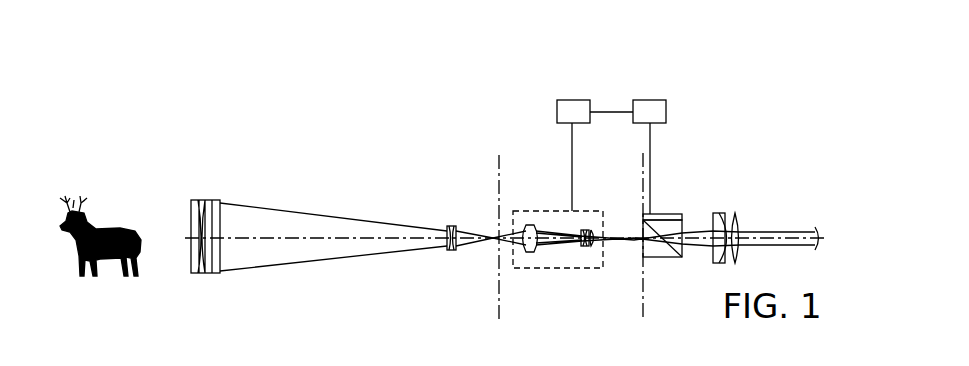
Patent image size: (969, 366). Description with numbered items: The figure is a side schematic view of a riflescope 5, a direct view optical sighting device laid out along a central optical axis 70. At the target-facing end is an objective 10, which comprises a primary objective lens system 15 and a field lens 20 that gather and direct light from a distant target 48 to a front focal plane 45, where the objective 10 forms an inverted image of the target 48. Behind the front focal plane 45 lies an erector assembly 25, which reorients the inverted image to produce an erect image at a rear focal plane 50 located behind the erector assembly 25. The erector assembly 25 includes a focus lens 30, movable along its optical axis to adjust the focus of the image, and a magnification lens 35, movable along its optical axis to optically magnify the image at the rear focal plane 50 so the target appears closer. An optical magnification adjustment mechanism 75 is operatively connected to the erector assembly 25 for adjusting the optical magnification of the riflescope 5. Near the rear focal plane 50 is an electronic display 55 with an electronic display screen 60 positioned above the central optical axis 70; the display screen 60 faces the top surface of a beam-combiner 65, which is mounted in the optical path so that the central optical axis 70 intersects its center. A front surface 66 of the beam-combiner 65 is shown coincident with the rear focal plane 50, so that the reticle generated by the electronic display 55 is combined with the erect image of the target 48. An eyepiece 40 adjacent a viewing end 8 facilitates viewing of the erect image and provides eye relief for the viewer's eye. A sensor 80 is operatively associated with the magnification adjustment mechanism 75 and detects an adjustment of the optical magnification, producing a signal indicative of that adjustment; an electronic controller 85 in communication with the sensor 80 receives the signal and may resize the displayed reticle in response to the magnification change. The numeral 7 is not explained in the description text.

The riflescope 5 is at (402, 78).
The objective lens 7 is at (196, 196).
The viewing end 8 is at (787, 226).
The objective 10 is at (307, 231).
The primary objective lens system 15 is at (203, 277).
The field lens 20 is at (452, 252).
The erector assembly 25 is at (558, 241).
The focus lens 30 is at (530, 223).
The magnification lens 35 is at (588, 228).
The eyepiece 40 is at (728, 213).
The front focal plane 45 is at (497, 318).
The target 48 is at (105, 256).
The rear focal plane 50 is at (637, 242).
The electronic display 55 is at (660, 213).
The electronic display screen 60 is at (672, 213).
The beam-combiner 65 is at (665, 259).
The front surface 66 is at (641, 239).
The central optical axis 70 is at (275, 240).
The optical magnification adjustment mechanism 75 is at (555, 207).
The sensor 80 is at (571, 100).
The electronic controller 85 is at (647, 100).